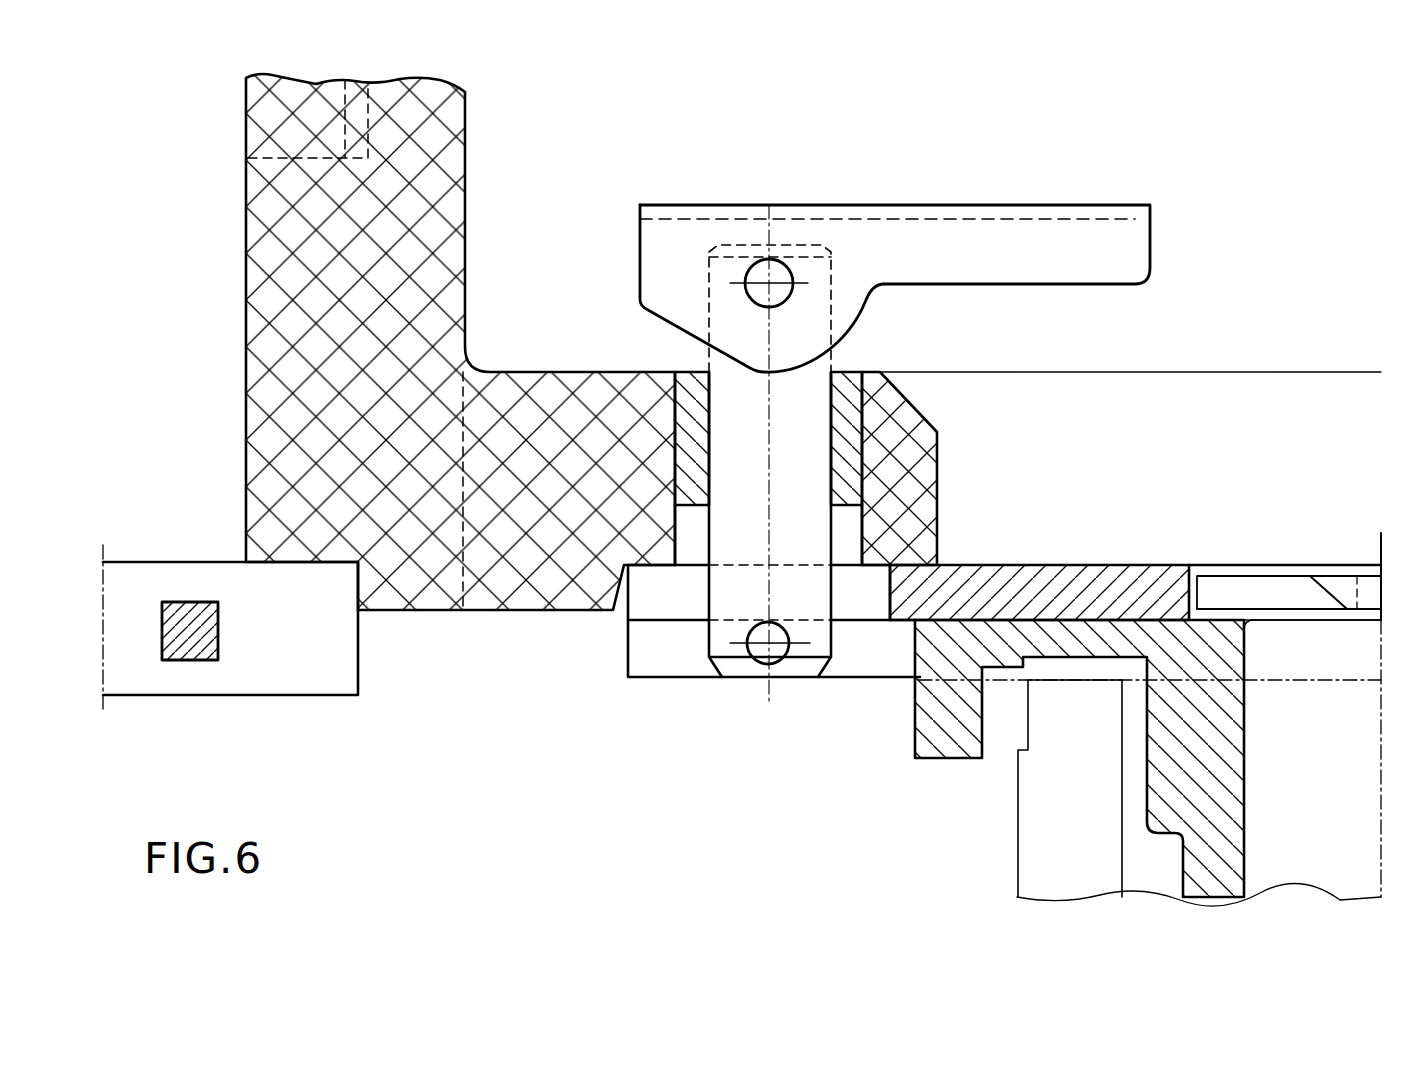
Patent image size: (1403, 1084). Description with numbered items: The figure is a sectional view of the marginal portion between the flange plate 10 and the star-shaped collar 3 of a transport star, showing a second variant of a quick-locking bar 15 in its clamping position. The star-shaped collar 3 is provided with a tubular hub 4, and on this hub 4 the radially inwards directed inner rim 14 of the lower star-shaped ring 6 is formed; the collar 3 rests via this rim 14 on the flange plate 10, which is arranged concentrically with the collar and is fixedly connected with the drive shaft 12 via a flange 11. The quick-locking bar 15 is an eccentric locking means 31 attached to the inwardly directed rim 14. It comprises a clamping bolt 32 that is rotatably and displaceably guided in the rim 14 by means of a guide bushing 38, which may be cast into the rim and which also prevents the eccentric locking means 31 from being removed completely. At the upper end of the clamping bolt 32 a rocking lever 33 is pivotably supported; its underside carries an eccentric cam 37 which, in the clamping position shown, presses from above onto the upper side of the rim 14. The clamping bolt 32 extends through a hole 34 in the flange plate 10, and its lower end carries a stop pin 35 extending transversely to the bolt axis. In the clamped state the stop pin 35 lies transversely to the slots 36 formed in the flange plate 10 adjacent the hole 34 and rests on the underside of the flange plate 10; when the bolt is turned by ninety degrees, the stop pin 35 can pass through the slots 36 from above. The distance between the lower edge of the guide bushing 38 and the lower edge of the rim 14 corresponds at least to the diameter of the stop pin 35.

The star-shaped collar 3 is at (470, 197).
The tubular hub 4 is at (303, 337).
The lower star-shaped ring 6 is at (148, 582).
The flange plate 10 is at (1097, 597).
The flange 11 is at (1213, 653).
The drive shaft 12 is at (1323, 813).
The inwardly directed rim 14 is at (540, 440).
The quick-locking bar 15 is at (953, 220).
The eccentric locking means 31 is at (1115, 188).
The clamping bolt 32 is at (792, 488).
The rocking lever 33 is at (920, 240).
The hole 34 is at (835, 593).
The stop pin 35 is at (760, 650).
The slots 36 is at (687, 590).
The eccentric cam 37 is at (840, 358).
The guide bushing 38 is at (850, 420).